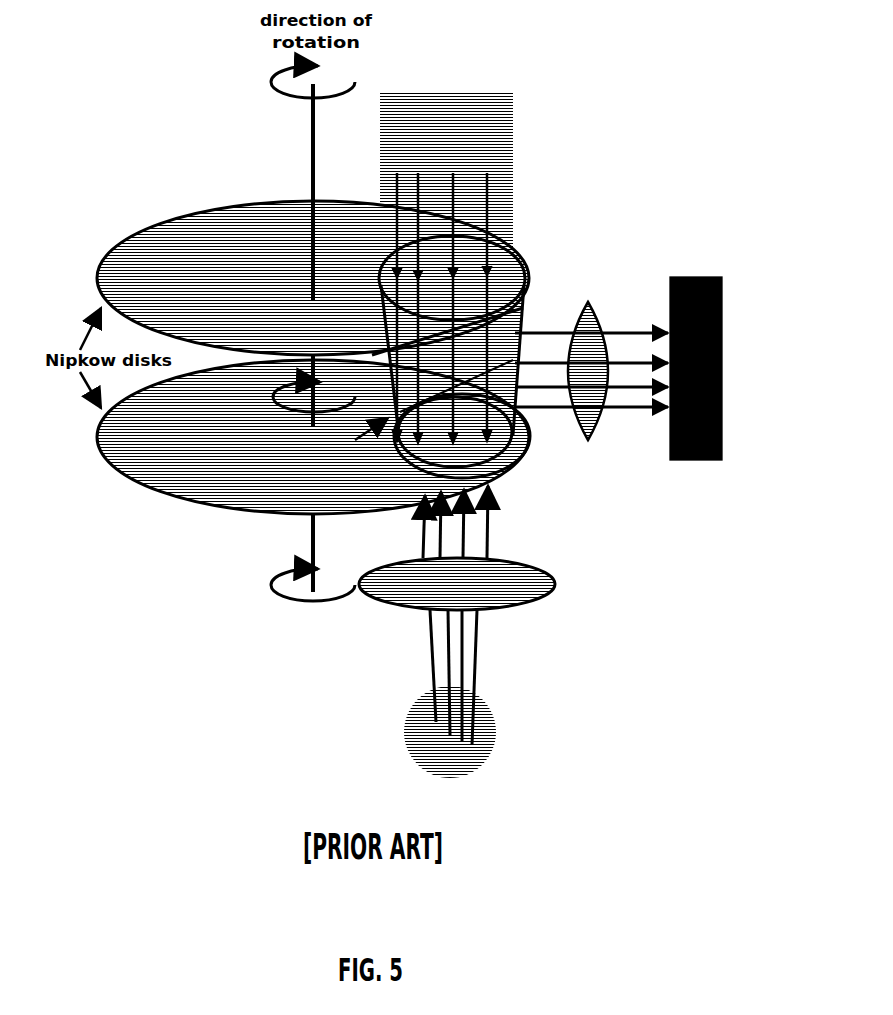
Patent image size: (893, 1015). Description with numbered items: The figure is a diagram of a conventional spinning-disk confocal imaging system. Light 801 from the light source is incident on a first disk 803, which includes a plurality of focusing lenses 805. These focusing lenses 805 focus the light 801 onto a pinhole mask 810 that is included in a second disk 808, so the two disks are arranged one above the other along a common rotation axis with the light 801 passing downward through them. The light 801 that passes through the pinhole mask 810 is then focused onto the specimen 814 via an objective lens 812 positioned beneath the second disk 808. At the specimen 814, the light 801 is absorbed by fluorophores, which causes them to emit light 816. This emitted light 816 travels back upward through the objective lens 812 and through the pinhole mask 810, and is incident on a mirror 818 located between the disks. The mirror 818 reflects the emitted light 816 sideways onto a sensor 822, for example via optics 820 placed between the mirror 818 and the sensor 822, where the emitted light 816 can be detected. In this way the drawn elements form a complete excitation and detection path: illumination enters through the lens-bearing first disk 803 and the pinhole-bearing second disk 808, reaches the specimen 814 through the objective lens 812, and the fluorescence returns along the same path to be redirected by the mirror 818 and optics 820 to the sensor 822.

The light 801 is at (490, 190).
The first disk 803 is at (158, 223).
The focusing lenses 805 is at (514, 252).
The second disk 808 is at (140, 477).
The pinhole mask 810 is at (523, 461).
The objective lens 812 is at (556, 580).
The specimen 814 is at (496, 722).
The emitted light 816 is at (492, 534).
The mirror 818 is at (518, 316).
The optics 820 is at (586, 300).
The sensor 822 is at (690, 462).